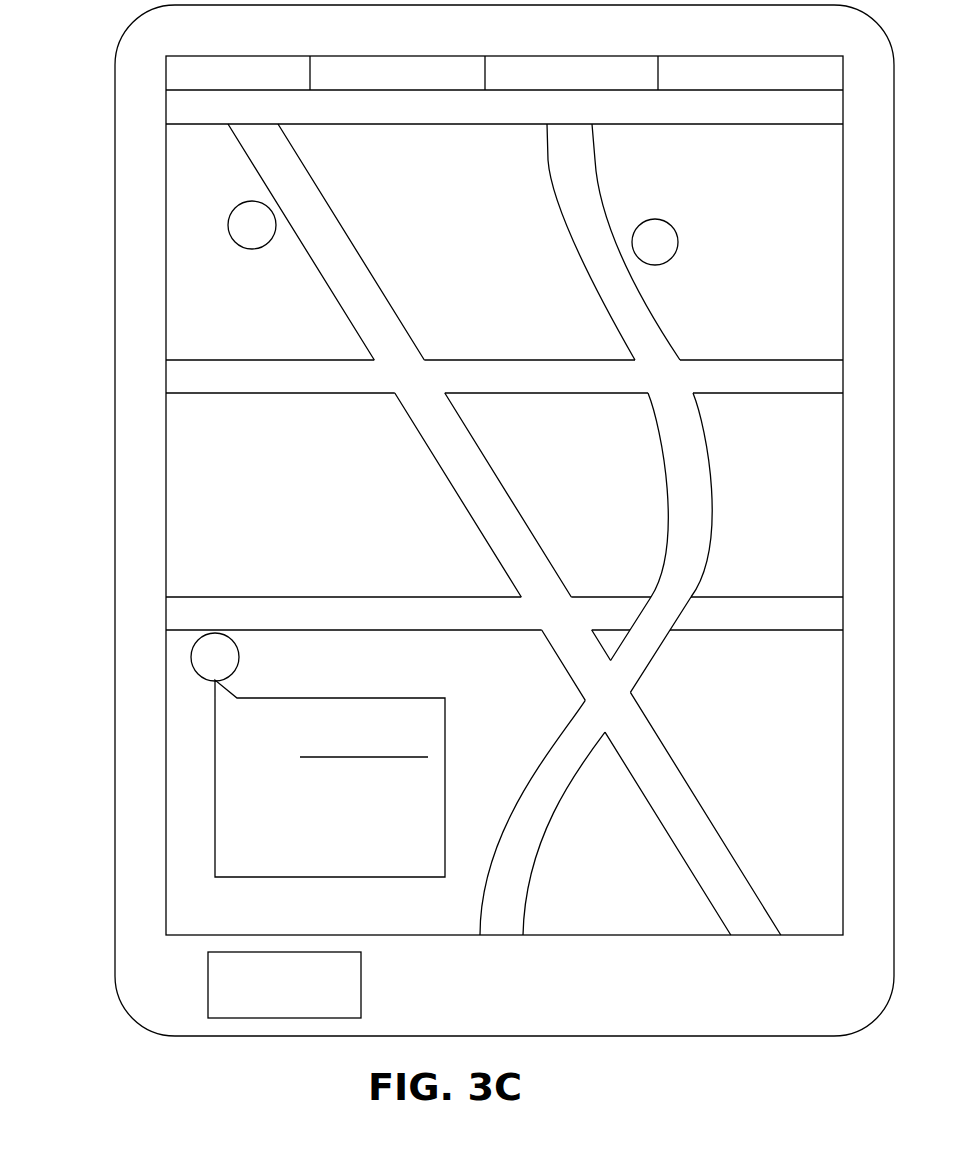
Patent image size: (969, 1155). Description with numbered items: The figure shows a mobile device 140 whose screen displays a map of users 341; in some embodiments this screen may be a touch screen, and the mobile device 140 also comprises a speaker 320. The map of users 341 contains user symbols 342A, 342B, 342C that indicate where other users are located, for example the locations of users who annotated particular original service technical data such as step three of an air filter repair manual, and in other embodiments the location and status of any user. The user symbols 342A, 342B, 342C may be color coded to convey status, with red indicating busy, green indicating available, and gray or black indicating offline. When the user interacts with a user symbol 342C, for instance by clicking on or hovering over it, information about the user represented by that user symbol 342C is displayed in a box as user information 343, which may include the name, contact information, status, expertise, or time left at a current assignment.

The mobile device 140 is at (547, 1005).
The speaker 320 is at (302, 1010).
The map of users 341 is at (98, 106).
The user symbol 342A is at (248, 250).
The user symbol 342B is at (658, 213).
The user symbol 342C is at (248, 660).
The user information 343 is at (453, 718).